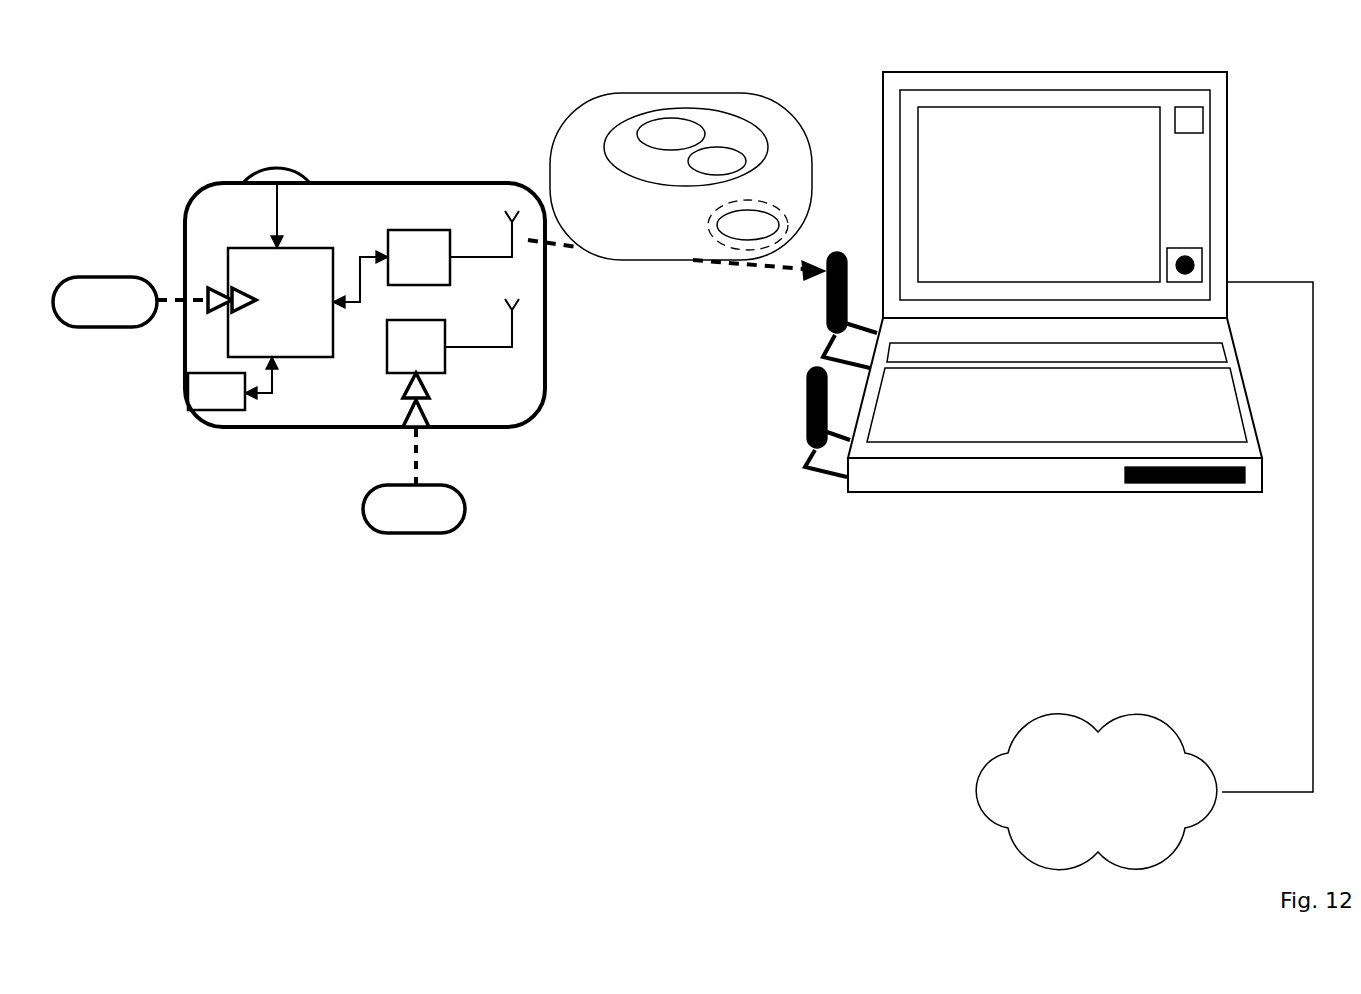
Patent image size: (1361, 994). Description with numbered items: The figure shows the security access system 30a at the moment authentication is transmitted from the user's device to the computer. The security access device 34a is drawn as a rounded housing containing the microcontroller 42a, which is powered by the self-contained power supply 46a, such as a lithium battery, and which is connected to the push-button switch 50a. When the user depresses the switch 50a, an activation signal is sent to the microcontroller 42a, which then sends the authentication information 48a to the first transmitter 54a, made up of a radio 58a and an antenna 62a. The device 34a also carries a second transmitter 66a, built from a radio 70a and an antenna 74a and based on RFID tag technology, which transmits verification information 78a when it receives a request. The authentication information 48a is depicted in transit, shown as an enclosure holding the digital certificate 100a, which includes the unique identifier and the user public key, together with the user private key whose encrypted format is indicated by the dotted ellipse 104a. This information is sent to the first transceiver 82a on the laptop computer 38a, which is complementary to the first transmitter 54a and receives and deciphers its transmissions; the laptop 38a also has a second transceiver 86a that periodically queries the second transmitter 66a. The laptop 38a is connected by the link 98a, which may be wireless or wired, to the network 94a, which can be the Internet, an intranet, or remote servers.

The security access system 30a is at (265, 728).
The security access device 34a is at (336, 432).
The laptop computer 38a is at (990, 498).
The microcontroller 42a is at (280, 302).
The power supply 46a is at (233, 383).
The authentication information 48a is at (536, 57).
The push-button switch 50a is at (240, 170).
The first transmitter 54a is at (482, 220).
The radio 58a is at (391, 269).
The antenna 62a is at (508, 203).
The second transmitter 66a is at (480, 315).
The radio 70a is at (416, 346).
The antenna 74a is at (509, 292).
The verification information 78a is at (414, 453).
The first transceiver 82a is at (815, 304).
The second transceiver 86a is at (795, 426).
The network 94a is at (1096, 792).
The link 98a is at (1302, 570).
The digital certificate 100a is at (621, 181).
The encryption 104a is at (710, 213).